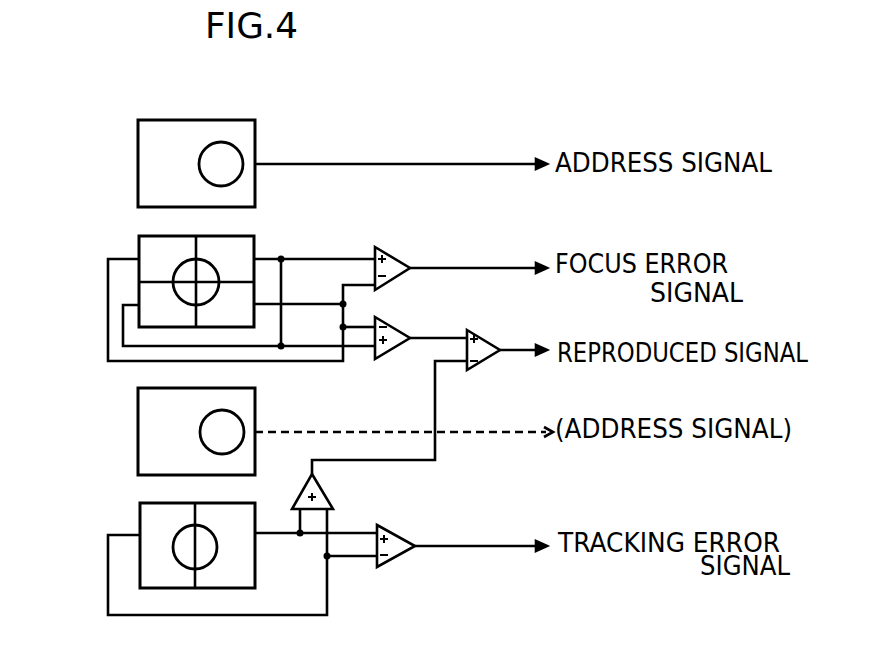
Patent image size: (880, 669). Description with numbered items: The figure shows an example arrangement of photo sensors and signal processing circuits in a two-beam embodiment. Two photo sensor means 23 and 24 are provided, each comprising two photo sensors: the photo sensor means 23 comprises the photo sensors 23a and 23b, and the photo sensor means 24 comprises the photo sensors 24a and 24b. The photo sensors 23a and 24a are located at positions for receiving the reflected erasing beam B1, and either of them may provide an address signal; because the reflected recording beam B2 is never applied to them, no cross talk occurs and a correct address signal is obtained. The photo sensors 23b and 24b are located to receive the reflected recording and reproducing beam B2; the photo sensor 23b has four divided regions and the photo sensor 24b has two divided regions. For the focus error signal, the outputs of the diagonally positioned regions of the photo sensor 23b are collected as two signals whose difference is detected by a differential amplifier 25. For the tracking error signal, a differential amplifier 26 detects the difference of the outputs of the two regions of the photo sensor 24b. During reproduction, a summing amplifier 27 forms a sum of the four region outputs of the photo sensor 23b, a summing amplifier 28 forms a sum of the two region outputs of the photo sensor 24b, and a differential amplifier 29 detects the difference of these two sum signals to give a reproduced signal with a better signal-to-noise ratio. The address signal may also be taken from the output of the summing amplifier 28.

The photo sensor means 23 is at (87, 123).
The photo sensor 23a is at (140, 149).
The photo sensor 23b is at (137, 253).
The photo sensor means 24 is at (87, 442).
The photo sensor 24a is at (145, 453).
The photo sensor 24b is at (146, 521).
The differential amplifier 25 is at (393, 252).
The differential amplifier 26 is at (398, 532).
The summing amplifier 27 is at (393, 325).
The summing amplifier 28 is at (327, 488).
The differential amplifier 29 is at (510, 326).
The erasing beam B1 is at (232, 165).
The recording and reproducing beam B2 is at (210, 270).